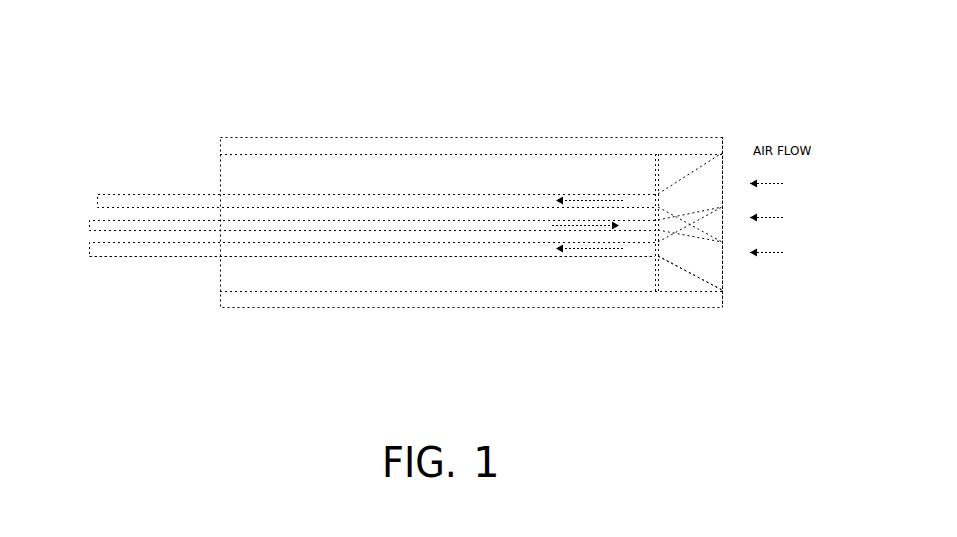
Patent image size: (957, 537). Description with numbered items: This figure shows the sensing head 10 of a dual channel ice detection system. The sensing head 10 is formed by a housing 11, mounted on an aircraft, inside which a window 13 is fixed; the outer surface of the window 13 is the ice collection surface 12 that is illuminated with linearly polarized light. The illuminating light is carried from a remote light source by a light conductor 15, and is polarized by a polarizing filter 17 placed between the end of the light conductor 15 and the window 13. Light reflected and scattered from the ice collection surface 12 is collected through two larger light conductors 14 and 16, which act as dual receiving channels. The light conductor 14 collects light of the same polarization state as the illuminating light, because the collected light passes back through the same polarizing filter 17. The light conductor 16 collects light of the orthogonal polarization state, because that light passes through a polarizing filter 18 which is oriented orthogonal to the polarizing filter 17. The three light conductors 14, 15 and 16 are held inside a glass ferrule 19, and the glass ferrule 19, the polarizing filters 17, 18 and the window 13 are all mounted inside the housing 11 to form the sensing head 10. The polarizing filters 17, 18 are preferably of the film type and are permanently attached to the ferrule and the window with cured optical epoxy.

The sensing head 10 is at (594, 131).
The housing 11 is at (395, 308).
The ice collection surface 12 is at (723, 293).
The window 13 is at (686, 279).
The light conductor 14 is at (159, 193).
The light conductor 15 is at (155, 244).
The light conductor 16 is at (190, 266).
The polarizing filter 17 is at (667, 151).
The polarizing filter 18 is at (735, 175).
The glass ferrule 19 is at (528, 164).